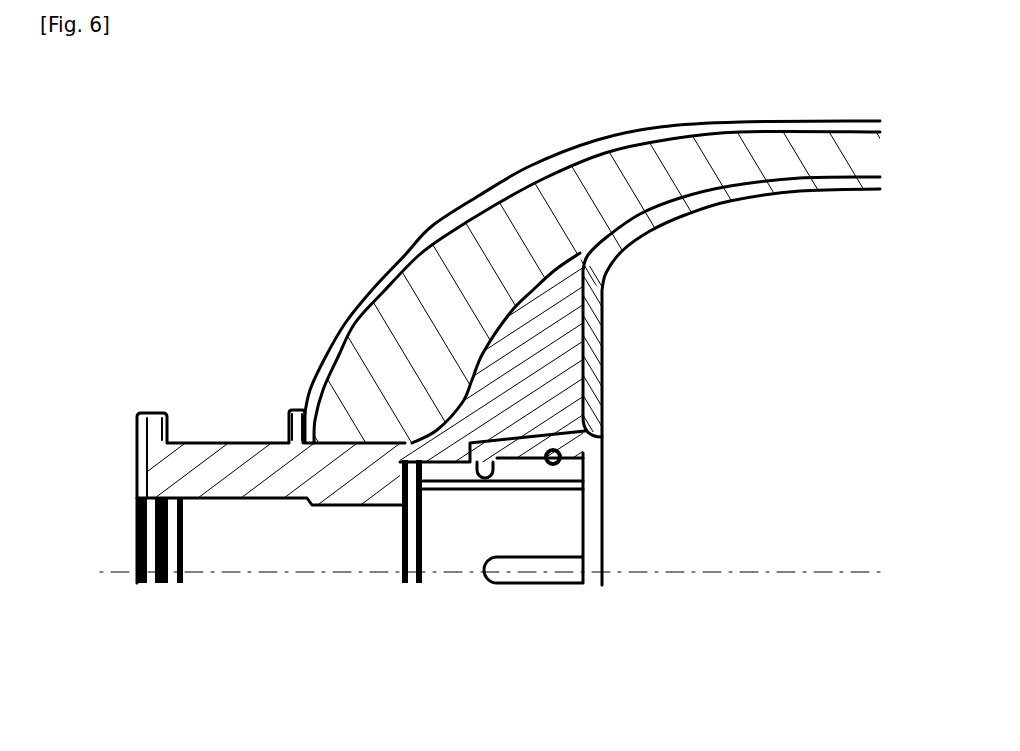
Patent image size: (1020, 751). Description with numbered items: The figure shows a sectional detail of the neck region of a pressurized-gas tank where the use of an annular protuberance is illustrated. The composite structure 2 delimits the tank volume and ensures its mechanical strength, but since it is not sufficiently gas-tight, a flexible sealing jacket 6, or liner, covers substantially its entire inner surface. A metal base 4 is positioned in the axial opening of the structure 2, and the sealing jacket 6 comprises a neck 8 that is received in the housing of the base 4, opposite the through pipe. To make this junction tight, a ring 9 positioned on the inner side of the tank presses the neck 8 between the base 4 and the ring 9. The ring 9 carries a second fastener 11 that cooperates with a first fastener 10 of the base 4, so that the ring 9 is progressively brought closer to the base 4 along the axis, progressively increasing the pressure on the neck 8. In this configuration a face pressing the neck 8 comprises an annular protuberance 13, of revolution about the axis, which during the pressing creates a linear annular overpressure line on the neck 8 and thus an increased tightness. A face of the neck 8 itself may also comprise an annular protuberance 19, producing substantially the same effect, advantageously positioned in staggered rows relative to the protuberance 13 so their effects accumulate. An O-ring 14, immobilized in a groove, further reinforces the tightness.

The structure 2 is at (543, 288).
The base 4 is at (272, 460).
The sealing jacket 6 is at (640, 381).
The neck 8 is at (493, 352).
The ring 9 is at (622, 518).
The first fastener 10 is at (190, 576).
The second fastener 11 is at (353, 542).
The annular protuberance 13 is at (458, 592).
The O-ring 14 is at (634, 392).
The annular protuberance 19 is at (413, 571).